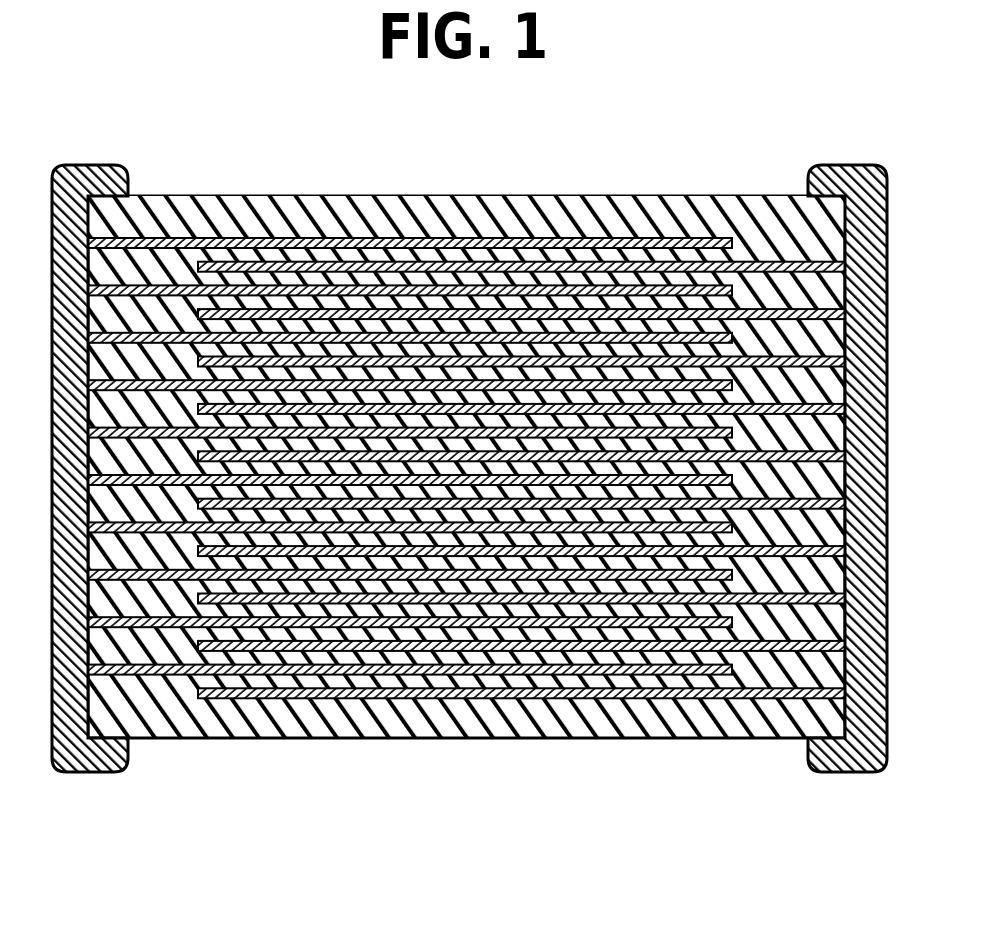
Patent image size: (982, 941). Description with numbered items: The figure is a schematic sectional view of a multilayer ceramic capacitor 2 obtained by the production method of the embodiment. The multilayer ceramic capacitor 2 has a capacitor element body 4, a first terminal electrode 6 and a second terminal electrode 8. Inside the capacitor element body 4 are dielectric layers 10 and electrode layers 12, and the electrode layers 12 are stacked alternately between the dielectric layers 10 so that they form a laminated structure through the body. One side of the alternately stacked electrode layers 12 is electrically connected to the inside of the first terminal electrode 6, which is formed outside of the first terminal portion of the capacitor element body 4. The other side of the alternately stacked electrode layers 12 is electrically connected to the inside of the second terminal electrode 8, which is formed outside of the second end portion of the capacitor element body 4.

The multilayer ceramic capacitor 2 is at (469, 493).
The capacitor element body 4 is at (677, 740).
The first terminal electrode 6 is at (73, 772).
The second terminal electrode 8 is at (845, 170).
The dielectric layer 10 is at (403, 232).
The electrode layer 12 is at (507, 243).